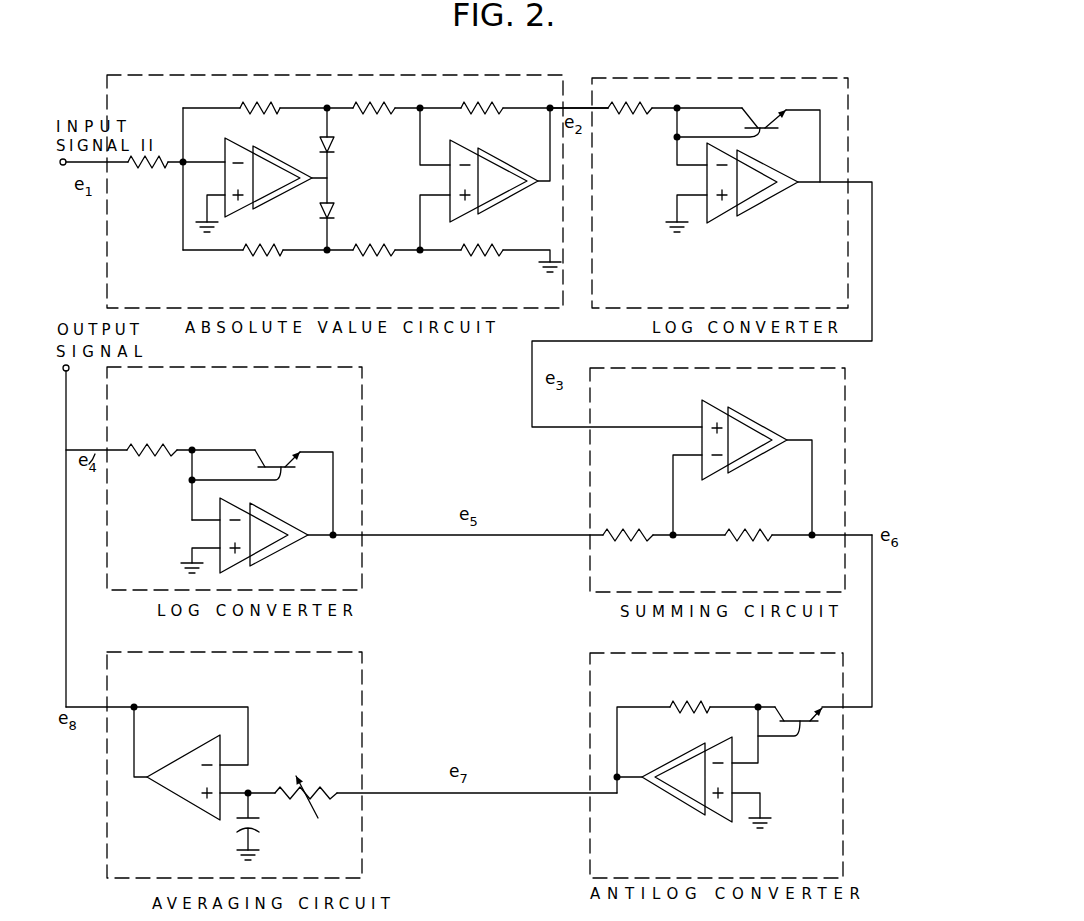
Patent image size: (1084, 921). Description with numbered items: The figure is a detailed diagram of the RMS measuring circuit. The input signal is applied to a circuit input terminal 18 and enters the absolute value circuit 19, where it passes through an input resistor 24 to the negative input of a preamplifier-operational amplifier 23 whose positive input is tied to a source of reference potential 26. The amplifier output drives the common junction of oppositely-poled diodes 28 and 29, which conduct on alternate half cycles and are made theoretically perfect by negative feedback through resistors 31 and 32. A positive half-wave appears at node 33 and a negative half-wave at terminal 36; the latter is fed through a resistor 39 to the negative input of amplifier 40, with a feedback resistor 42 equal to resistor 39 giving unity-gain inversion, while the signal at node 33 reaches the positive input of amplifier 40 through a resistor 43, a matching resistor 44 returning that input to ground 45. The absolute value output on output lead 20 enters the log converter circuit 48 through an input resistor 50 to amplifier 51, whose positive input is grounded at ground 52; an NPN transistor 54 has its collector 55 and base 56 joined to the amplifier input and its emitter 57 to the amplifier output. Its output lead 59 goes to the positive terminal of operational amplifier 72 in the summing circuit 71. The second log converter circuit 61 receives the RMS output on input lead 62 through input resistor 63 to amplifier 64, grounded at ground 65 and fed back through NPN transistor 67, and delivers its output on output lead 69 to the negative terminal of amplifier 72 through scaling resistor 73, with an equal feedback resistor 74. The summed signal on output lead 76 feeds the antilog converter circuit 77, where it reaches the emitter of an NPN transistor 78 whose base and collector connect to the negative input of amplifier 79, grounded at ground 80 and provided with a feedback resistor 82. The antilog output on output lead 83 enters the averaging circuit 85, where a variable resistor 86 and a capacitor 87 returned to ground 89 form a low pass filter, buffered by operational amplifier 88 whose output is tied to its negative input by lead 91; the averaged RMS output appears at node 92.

The circuit input terminal 18 is at (63, 166).
The absolute value circuit 19 is at (212, 307).
The output lead 20 is at (578, 106).
The preamplifier-operational amplifier 23 is at (279, 153).
The input resistor 24 is at (133, 164).
The source of reference potential 26 is at (217, 230).
The diode 28 is at (334, 146).
The diode 29 is at (334, 212).
The feedback resistor 31 is at (269, 104).
The feedback resistor 32 is at (258, 254).
The node 33 is at (327, 254).
The terminal 36 is at (330, 104).
The resistor 39 is at (396, 104).
The amplifier 40 is at (502, 140).
The feedback resistor 42 is at (486, 104).
The resistor 43 is at (375, 254).
The resistor 44 is at (482, 256).
The ground 45 is at (546, 278).
The log converter circuit 48 is at (738, 303).
The input resistor 50 is at (624, 110).
The amplifier 51 is at (757, 208).
The ground 52 is at (666, 238).
The NPN transistor 54 is at (761, 88).
The collector 55 is at (727, 106).
The base 56 is at (758, 138).
The emitter 57 is at (786, 106).
The output lead 59 is at (872, 212).
The second log converter circuit 61 is at (363, 412).
The input lead 62 is at (68, 598).
The input resistor 63 is at (145, 446).
The amplifier 64 is at (270, 556).
The ground 65 is at (180, 569).
The NPN transistor 67 is at (290, 447).
The output lead 69 is at (415, 537).
The summing circuit 71 is at (673, 582).
The operational amplifier 72 is at (760, 462).
The scaling resistor 73 is at (614, 532).
The feedback resistor 74 is at (764, 544).
The output lead 76 is at (872, 636).
The antilog converter circuit 77 is at (678, 879).
The transistor 78 is at (816, 703).
The amplifier 79 is at (678, 803).
The ground 80 is at (778, 824).
The feedback resistor 82 is at (676, 705).
The output lead 83 is at (487, 794).
The averaging circuit 85 is at (355, 675).
The variable resistor 86 is at (312, 786).
The capacitor 87 is at (264, 825).
The operational amplifier 88 is at (194, 810).
The ground 89 is at (237, 856).
The lead 91 is at (201, 704).
The node 92 is at (136, 704).